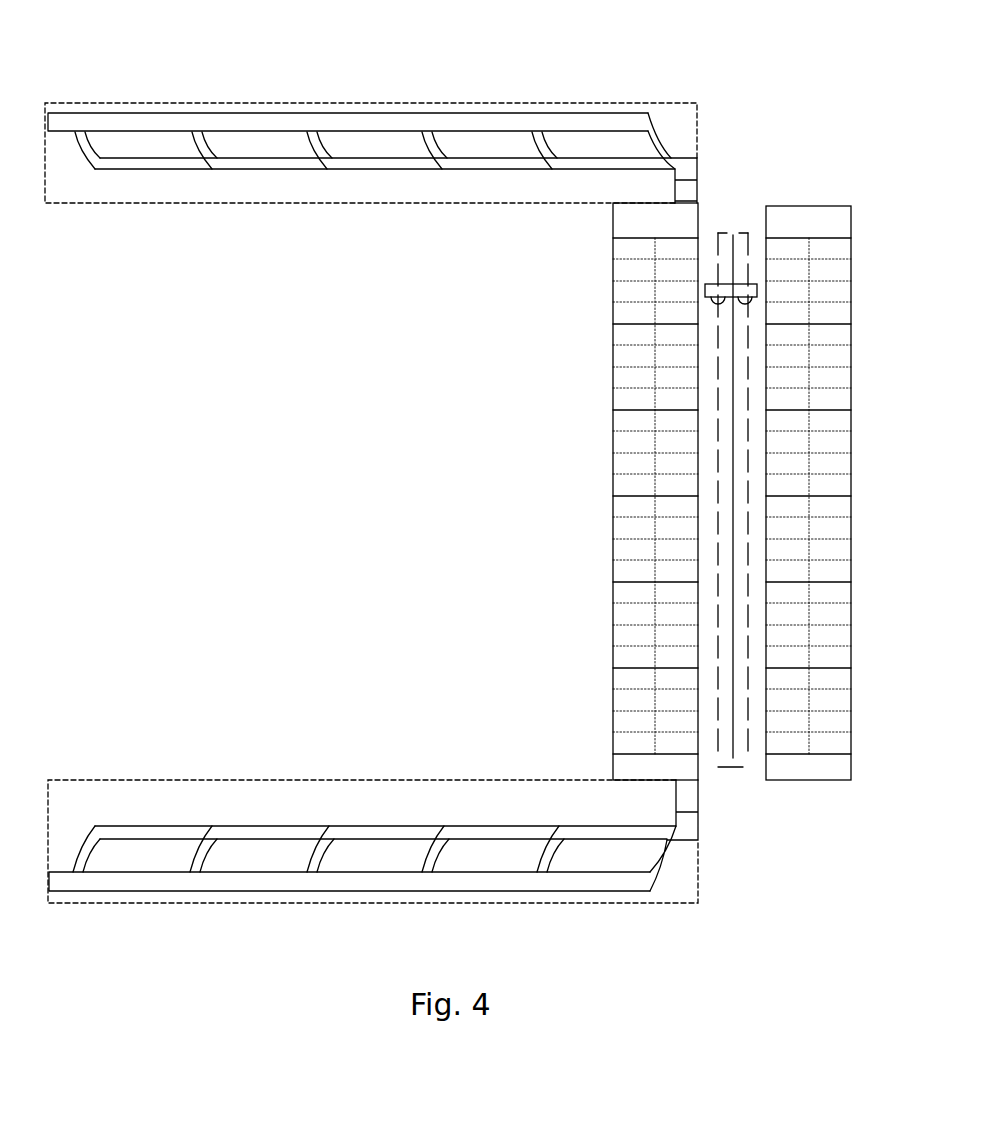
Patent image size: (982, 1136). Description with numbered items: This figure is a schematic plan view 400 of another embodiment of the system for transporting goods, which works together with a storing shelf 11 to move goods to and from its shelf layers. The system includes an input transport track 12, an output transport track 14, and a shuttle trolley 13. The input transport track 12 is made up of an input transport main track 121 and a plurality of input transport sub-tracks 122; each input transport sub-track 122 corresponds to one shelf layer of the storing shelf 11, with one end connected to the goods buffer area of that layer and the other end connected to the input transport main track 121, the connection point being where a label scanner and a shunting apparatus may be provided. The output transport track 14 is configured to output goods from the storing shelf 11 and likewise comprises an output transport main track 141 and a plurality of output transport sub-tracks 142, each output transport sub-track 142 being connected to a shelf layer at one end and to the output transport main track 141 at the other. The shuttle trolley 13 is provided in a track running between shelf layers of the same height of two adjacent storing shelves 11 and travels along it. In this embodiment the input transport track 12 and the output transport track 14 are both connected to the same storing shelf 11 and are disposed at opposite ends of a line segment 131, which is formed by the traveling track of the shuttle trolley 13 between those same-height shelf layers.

The schematic plan view 400 is at (788, 28).
The storing shelf 11 is at (797, 205).
The input transport track 12 is at (371, 147).
The input transport main track 121 is at (332, 118).
The input transport sub-track 122 is at (318, 170).
The shuttle trolley 13 is at (756, 262).
The line segment 131 is at (733, 768).
The output transport track 14 is at (373, 866).
The output transport main track 141 is at (251, 880).
The output transport sub-track 142 is at (373, 835).